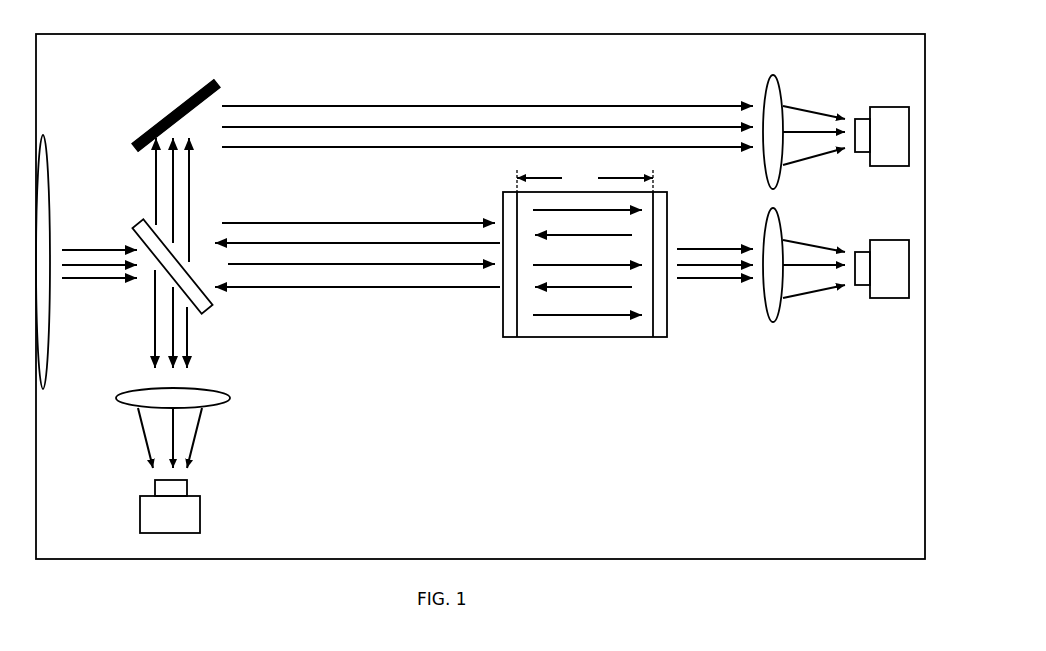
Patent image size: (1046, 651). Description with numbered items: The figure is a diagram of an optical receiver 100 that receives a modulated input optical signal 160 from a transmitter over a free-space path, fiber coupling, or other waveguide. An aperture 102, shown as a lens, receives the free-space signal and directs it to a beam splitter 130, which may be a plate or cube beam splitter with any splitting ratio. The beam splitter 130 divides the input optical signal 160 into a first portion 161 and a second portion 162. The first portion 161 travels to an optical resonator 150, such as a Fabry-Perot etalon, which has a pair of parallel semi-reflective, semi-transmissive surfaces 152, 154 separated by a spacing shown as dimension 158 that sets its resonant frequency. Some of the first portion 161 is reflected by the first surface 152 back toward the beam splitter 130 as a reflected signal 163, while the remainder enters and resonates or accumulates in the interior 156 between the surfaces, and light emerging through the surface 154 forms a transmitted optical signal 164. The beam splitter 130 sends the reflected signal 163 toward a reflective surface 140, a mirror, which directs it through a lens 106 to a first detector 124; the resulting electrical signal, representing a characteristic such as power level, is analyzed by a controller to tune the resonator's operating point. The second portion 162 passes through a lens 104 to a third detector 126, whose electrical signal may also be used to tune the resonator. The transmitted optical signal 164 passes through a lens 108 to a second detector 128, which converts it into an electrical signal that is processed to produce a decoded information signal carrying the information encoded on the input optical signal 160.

The optical receiver 100 is at (155, 33).
The aperture 102 is at (50, 157).
The lens 104 is at (230, 398).
The lens 106 is at (775, 77).
The lens 108 is at (783, 314).
The first detector 124 is at (903, 107).
The third detector 126 is at (200, 498).
The second detector 128 is at (903, 240).
The beam splitter 130 is at (212, 312).
The reflective surface 140 is at (190, 98).
The optical resonator 150 is at (569, 287).
The first surface 152 is at (510, 203).
The semi-reflective surface 154 is at (657, 208).
The interior 156 is at (585, 342).
The dimension 158 is at (585, 180).
The input optical signal 160 is at (117, 282).
The first portion 161 is at (363, 222).
The second portion 162 is at (187, 343).
The reflected signal 163 is at (192, 165).
The transmitted optical signal 164 is at (693, 282).